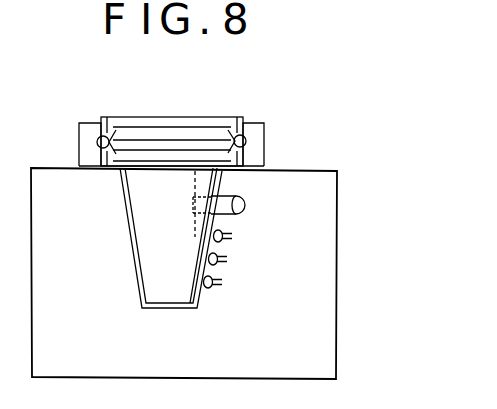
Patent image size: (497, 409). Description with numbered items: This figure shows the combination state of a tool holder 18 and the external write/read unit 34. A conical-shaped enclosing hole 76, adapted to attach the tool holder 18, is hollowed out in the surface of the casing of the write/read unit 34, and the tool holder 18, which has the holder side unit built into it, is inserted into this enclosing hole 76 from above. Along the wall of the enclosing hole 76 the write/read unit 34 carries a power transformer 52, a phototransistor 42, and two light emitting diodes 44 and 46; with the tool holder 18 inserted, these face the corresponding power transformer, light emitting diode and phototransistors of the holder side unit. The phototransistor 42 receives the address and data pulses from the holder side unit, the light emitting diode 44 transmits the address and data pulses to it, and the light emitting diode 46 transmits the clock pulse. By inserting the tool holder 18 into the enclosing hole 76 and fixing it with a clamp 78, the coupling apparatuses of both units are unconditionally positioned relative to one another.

The tool holder 18 is at (142, 122).
The write/read unit 34 is at (325, 220).
The phototransistor 42 is at (227, 241).
The light emitting diode 44 is at (223, 264).
The light emitting diode 46 is at (210, 289).
The power transformer 52 is at (247, 205).
The enclosing hole 76 is at (137, 256).
The clamp 78 is at (253, 124).